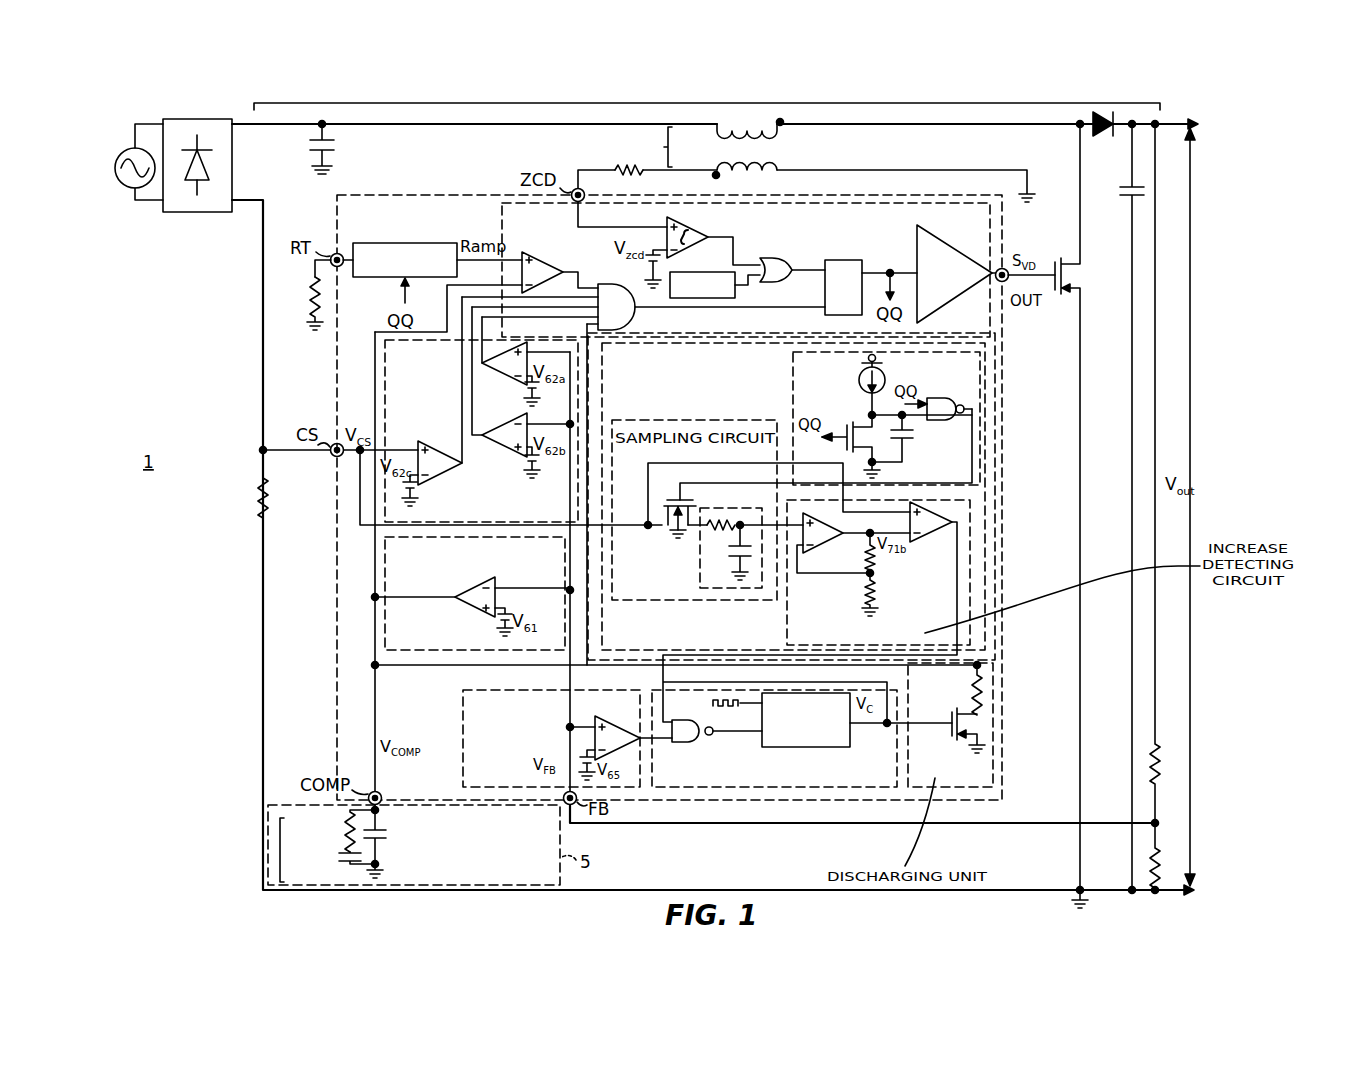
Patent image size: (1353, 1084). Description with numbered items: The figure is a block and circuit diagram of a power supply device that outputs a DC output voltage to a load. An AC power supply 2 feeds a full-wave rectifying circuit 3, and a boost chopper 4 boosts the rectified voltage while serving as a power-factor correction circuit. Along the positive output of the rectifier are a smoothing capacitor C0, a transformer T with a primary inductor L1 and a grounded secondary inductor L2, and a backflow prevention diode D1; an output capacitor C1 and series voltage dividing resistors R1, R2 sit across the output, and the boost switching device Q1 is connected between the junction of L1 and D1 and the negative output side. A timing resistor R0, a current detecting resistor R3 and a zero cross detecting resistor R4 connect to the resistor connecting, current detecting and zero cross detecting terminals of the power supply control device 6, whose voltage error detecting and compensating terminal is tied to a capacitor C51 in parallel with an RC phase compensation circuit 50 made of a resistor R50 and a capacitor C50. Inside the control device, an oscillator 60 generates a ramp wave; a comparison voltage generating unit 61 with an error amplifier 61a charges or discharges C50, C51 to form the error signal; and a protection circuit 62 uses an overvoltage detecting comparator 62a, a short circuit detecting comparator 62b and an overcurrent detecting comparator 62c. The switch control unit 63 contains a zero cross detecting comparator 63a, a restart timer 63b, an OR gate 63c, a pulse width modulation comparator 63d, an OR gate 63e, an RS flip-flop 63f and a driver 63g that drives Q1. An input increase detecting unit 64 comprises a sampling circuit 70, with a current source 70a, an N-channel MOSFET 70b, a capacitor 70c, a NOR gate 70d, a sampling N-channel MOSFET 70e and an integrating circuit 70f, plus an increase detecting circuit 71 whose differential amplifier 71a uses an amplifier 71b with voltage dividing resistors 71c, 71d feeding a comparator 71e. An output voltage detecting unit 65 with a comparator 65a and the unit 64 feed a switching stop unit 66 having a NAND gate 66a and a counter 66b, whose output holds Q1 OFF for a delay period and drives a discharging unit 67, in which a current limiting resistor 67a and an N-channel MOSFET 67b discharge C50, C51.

The AC power supply 2 is at (122, 188).
The full-wave rectifying circuit 3 is at (192, 212).
The boost chopper 4 is at (780, 103).
The power supply control device 6 is at (404, 194).
The RC phase compensation circuit 50 is at (280, 852).
The oscillator 60 is at (376, 279).
The comparison voltage generating unit 61 is at (384, 627).
The error amplifier 61a is at (466, 610).
The protection circuit 62 is at (384, 380).
The overvoltage detecting comparator 62a is at (500, 374).
The short circuit detecting comparator 62b is at (500, 446).
The overcurrent detecting comparator 62c is at (422, 438).
The switch control unit 63 is at (873, 202).
The zero cross detecting comparator 63a is at (704, 226).
The restart timer 63b is at (737, 296).
The OR gate 63c is at (783, 260).
The pulse width modulation comparator 63d is at (548, 254).
The OR gate 63e is at (628, 324).
The RS flip-flop 63f is at (855, 258).
The driver 63g is at (948, 262).
The input increase detecting unit 64 is at (995, 348).
The output voltage detecting unit 65 is at (462, 700).
The comparator 65a is at (620, 718).
The switching stop unit 66 is at (768, 788).
The NAND gate 66a is at (700, 745).
The counter 66b is at (838, 748).
The discharging unit 67 is at (962, 788).
The resistor 67a is at (972, 690).
The N-channel MOSFET 67b is at (953, 728).
The sampling circuit 70 is at (692, 418).
The current source 70a is at (858, 380).
The N-channel MOSFET 70b is at (846, 424).
The capacitor 70c is at (915, 436).
The NOR gate 70d is at (946, 398).
The N-channel MOSFET 70e is at (670, 494).
The integrating circuit 70f is at (700, 578).
The increase detecting circuit 71 is at (786, 633).
The differential amplifier 71a is at (834, 582).
The amplifier 71b is at (840, 542).
The voltage dividing resistor 71c is at (878, 575).
The voltage dividing resistor 71d is at (880, 600).
The comparator 71e is at (950, 526).
The smoothing capacitor C0 is at (310, 152).
The output capacitor C1 is at (1120, 200).
The diode D1 is at (1100, 142).
The boost switching device Q1 is at (1082, 272).
The voltage dividing resistor R1 is at (1160, 766).
The voltage dividing resistor R2 is at (1163, 856).
The current detecting resistor R3 is at (260, 500).
The zero cross detecting resistor R4 is at (622, 165).
The timing resistor R0 is at (309, 298).
The resistor R50 is at (344, 830).
The capacitor C50 is at (342, 866).
The capacitor C51 is at (386, 844).
The transformer T is at (717, 149).
The primary inductor L1 is at (714, 140).
The secondary inductor L2 is at (714, 163).